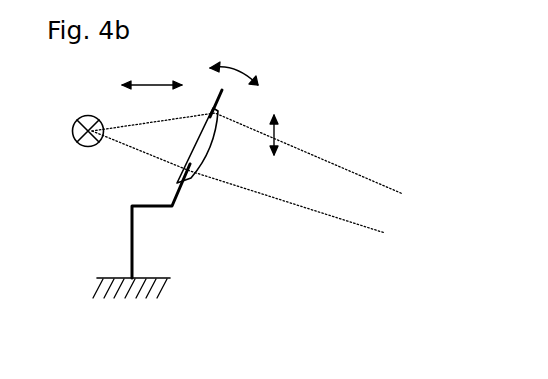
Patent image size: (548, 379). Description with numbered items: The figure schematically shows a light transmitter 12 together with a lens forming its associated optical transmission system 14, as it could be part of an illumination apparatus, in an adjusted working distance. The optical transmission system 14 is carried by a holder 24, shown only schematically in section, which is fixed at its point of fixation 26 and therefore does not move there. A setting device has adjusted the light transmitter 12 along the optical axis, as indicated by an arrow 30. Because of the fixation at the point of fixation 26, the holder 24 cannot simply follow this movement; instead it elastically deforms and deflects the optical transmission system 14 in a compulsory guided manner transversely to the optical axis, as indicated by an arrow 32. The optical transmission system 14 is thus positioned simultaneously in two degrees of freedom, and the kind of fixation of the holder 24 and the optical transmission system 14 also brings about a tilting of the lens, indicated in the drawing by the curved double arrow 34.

The light transmitter 12 is at (73, 133).
The optical transmission system 14 is at (212, 157).
The holder 24 is at (131, 244).
The point of fixation 26 is at (135, 278).
The arrow 30 is at (122, 86).
The arrow 32 is at (277, 119).
The rotation / tilt of lens 34 is at (239, 66).